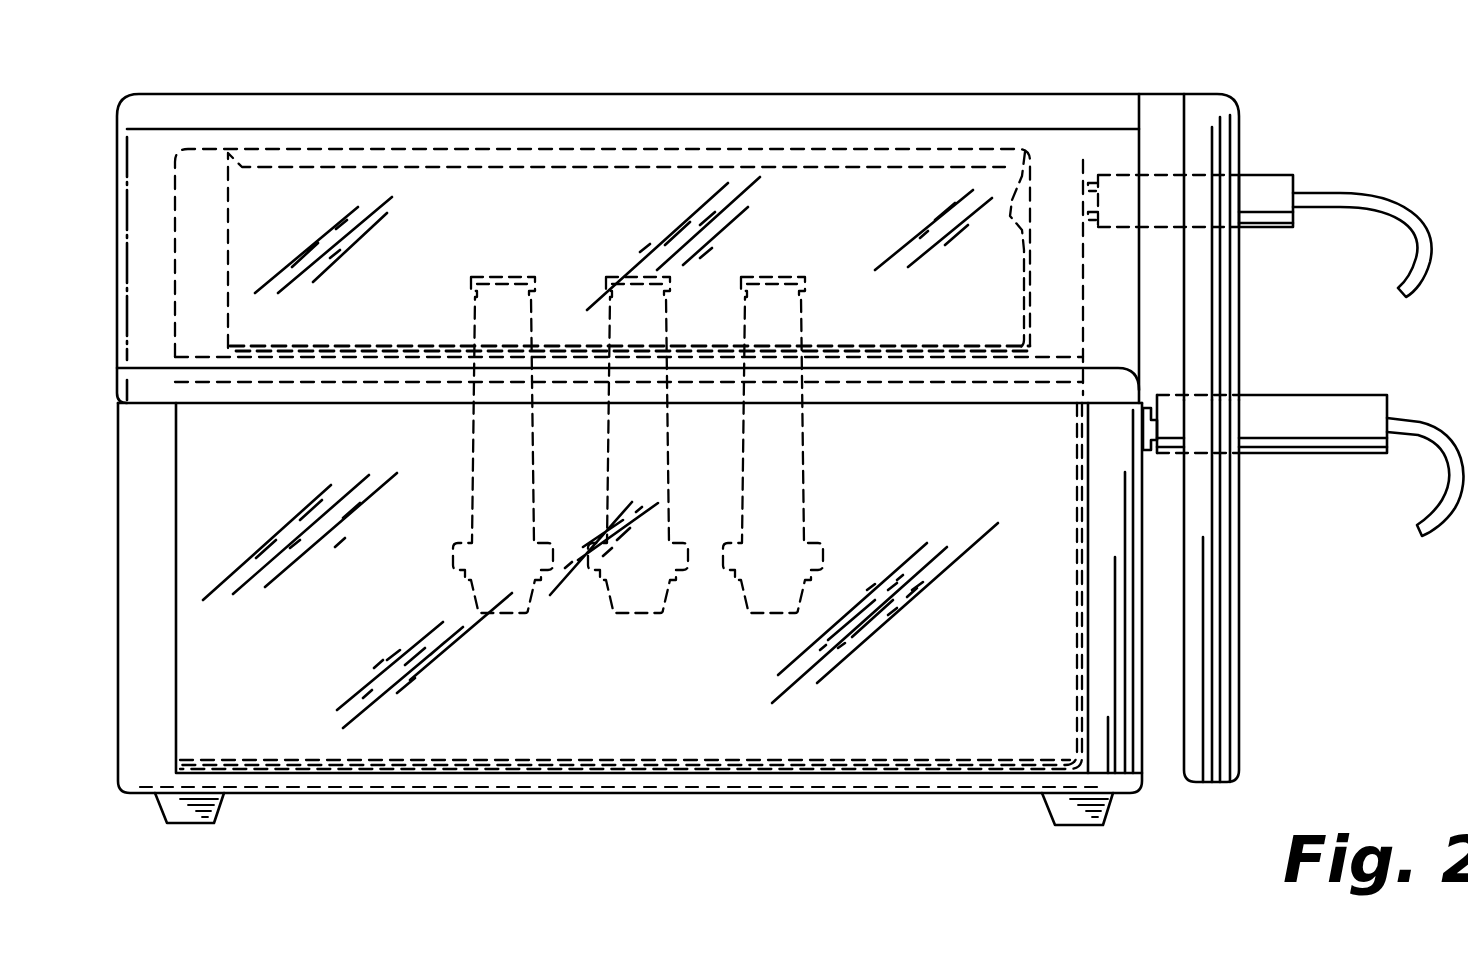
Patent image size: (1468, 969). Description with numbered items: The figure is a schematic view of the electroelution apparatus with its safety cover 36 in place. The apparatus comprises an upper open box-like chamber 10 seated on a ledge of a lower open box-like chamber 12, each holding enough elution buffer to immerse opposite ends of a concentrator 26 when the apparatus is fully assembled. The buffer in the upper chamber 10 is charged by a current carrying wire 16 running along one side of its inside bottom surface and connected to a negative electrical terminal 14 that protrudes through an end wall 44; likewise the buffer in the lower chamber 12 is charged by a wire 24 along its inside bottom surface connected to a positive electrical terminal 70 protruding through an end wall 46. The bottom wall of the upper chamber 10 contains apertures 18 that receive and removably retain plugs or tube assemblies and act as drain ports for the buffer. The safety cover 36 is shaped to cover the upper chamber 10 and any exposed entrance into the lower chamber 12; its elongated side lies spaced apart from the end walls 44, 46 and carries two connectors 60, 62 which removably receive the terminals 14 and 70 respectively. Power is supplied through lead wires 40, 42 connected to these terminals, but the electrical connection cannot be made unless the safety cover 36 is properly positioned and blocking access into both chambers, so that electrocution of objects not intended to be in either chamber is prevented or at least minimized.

The upper open box-like chamber 10 is at (205, 172).
The lower open box-like chamber 12 is at (128, 588).
The negative electrical terminal 14 is at (1095, 170).
The current carrying wire 16 is at (997, 340).
The apertures 18 is at (372, 340).
The current carrying wire 24 is at (922, 763).
The concentrator 26 is at (800, 453).
The safety cover 36 is at (1238, 113).
The lead wire 40 is at (1350, 197).
The lead wire 42 is at (1420, 470).
The end wall 44 is at (1140, 287).
The end wall 46 is at (1143, 590).
The connector 60 is at (1265, 227).
The connector 62 is at (1293, 393).
The positive electrical terminal 70 is at (1155, 445).